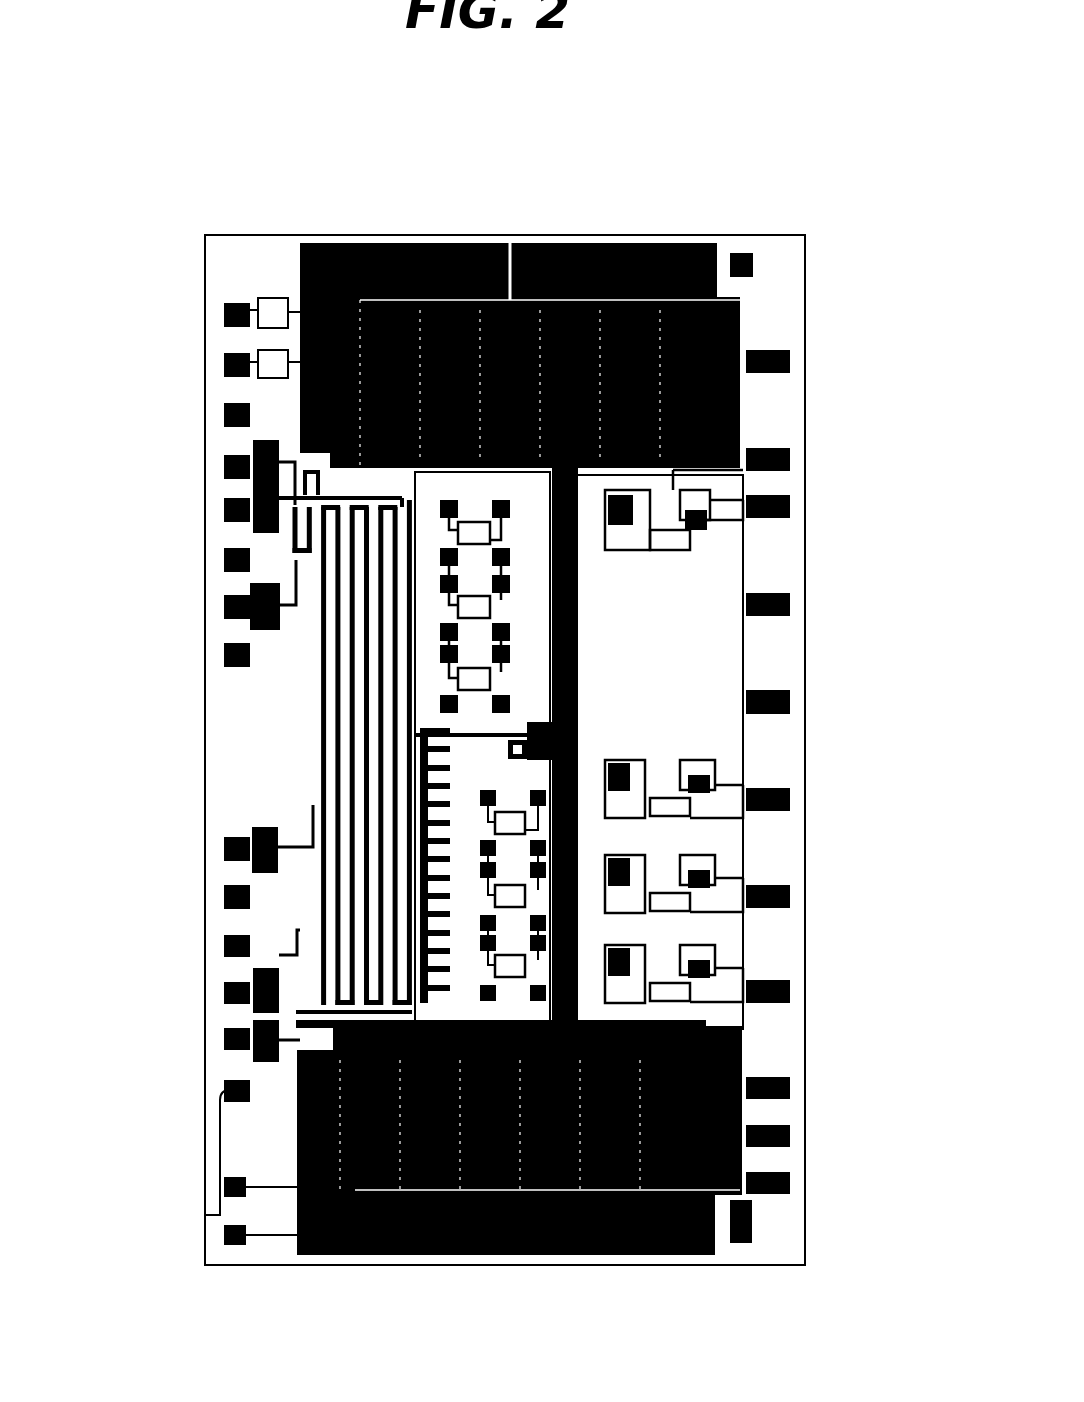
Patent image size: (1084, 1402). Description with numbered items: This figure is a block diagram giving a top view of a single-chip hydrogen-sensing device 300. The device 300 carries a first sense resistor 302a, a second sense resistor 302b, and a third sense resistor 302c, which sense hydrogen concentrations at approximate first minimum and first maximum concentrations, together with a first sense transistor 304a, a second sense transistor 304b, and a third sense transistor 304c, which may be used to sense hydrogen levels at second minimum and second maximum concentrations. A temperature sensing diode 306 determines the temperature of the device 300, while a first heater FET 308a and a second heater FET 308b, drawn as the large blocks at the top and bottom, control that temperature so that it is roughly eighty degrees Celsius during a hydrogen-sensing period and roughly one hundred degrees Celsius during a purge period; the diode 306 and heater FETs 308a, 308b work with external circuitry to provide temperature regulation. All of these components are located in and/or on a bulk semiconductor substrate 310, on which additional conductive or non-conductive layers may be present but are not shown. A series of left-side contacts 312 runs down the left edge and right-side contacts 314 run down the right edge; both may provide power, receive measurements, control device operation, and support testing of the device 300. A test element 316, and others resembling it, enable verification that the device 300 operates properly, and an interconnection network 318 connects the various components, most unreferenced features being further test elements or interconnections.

The single-chip hydrogen-sensing device 300 is at (838, 168).
The first sense resistor 302a is at (272, 460).
The second sense resistor 302b is at (273, 503).
The third sense resistor 302c is at (277, 607).
The first sense transistor 304a is at (635, 792).
The second sense transistor 304b is at (635, 895).
The third sense transistor 304c is at (635, 990).
The temperature sensing diode 306 is at (530, 745).
The first heater Field Effect Transistor (FET) 308a is at (540, 262).
The second heater Field Effect Transistor (FET) 308b is at (524, 1176).
The bulk semiconductor substrate 310 is at (782, 1243).
The left-side contacts 312 is at (228, 245).
The right-side contacts 314 is at (770, 245).
The test element 316 is at (487, 540).
The interconnection network 318 is at (578, 660).